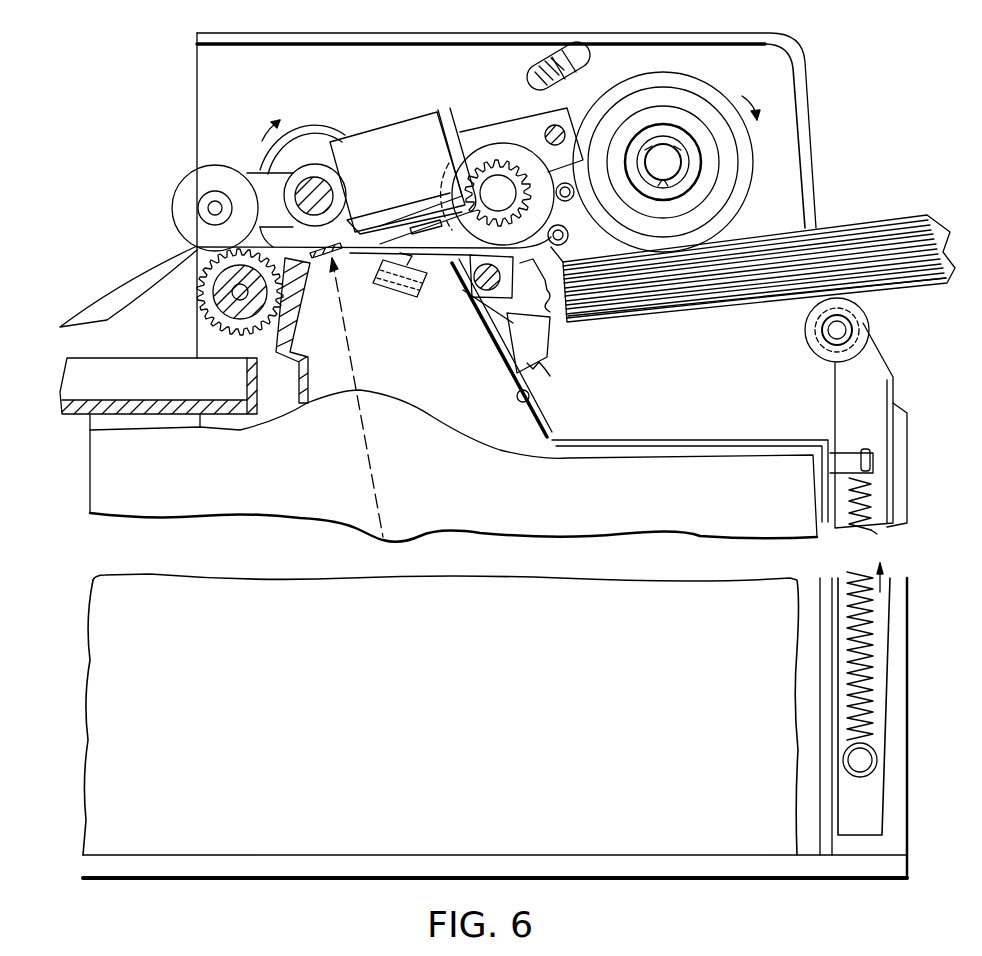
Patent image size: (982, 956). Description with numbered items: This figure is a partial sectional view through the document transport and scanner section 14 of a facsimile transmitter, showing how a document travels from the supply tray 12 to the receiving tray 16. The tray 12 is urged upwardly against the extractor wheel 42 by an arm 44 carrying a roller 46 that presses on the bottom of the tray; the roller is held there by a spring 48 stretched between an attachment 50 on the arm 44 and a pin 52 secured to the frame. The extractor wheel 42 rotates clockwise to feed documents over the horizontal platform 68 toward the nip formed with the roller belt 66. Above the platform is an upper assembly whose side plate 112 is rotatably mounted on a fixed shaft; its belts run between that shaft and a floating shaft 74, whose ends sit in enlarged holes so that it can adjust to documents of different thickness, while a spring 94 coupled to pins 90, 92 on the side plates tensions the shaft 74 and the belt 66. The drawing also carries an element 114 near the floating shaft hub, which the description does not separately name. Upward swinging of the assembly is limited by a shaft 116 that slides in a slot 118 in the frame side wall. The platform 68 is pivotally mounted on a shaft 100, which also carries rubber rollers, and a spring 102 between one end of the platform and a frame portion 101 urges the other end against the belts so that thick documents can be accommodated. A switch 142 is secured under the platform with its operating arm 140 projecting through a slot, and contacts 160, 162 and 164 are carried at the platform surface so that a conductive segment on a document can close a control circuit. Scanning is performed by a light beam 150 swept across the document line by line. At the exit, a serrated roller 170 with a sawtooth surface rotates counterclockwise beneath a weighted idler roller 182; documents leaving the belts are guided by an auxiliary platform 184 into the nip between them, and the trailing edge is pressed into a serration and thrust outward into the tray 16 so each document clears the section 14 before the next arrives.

The scanner section 14 is at (806, 68).
The tray 16 is at (162, 391).
The tray 12 is at (706, 318).
The extractor wheel 42 is at (706, 88).
The roller 46 is at (870, 325).
The arm 44 is at (883, 368).
The pin 52 is at (873, 460).
The spring 48 is at (873, 510).
The attachment 50 is at (865, 760).
The roller belt 66 is at (347, 130).
The shaft 74 is at (486, 165).
The spring 94 is at (500, 152).
The shaft 114 is at (510, 193).
The pin 92 is at (567, 201).
The pin 90 is at (570, 238).
The shaft 116 is at (533, 65).
The slot 118 is at (578, 58).
The side plate 112 is at (553, 118).
The switch 142 is at (422, 167).
The operating arm 140 is at (355, 222).
The weighted idler roller 182 is at (210, 167).
The contact 162 is at (335, 256).
The contact 164 is at (384, 287).
The contact 160 is at (460, 286).
The horizontal platform 68 is at (531, 285).
The shaft 100 is at (474, 310).
The spring 102 is at (552, 370).
The frame portion 101 is at (577, 438).
The light beam 150 is at (356, 372).
The serrated roller 170 is at (243, 337).
The auxiliary platform 184 is at (293, 334).